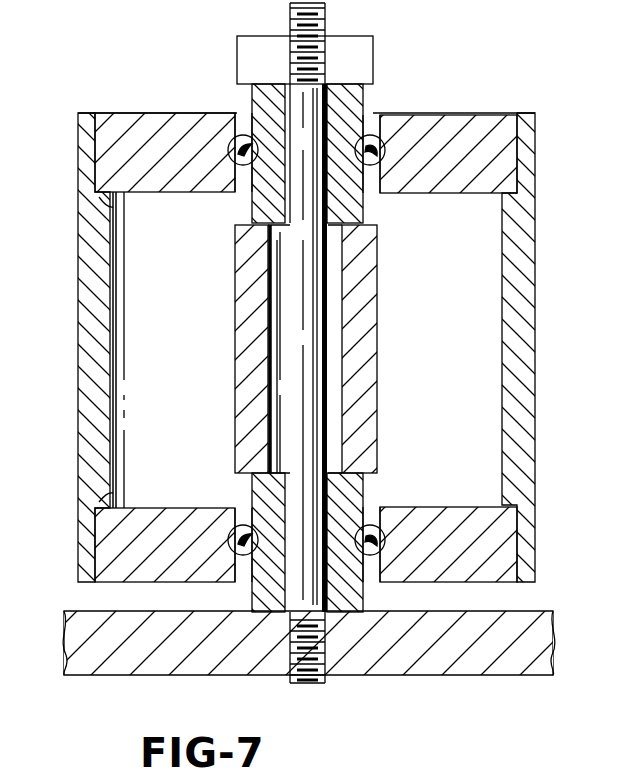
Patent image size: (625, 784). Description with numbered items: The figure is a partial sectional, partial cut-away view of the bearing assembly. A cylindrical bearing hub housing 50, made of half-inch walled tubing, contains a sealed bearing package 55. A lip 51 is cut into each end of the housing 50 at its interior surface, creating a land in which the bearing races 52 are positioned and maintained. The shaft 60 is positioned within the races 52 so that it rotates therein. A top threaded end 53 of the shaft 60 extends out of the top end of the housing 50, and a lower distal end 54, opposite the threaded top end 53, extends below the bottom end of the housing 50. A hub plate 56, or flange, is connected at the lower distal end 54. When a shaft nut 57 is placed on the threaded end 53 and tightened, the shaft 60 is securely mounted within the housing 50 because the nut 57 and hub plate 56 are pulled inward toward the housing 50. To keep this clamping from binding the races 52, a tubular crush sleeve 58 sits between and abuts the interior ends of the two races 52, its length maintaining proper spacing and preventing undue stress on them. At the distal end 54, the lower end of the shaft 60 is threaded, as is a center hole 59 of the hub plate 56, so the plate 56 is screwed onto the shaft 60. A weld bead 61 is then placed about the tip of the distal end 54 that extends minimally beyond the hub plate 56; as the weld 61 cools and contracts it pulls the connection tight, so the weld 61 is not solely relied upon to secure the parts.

The bearing hub housing 50 is at (102, 354).
The lip 51 is at (113, 206).
The bearing races 52 is at (205, 118).
The top threaded end 53 is at (326, 18).
The lower distal end 54 is at (307, 684).
The sealed bearing package 55 is at (500, 78).
The hub plate 56 is at (455, 660).
The shaft nut 57 is at (373, 64).
The tubular crush sleeve 58 is at (378, 335).
The center hole 59 is at (333, 640).
The shaft 60 is at (307, 343).
The weld bead 61 is at (290, 678).